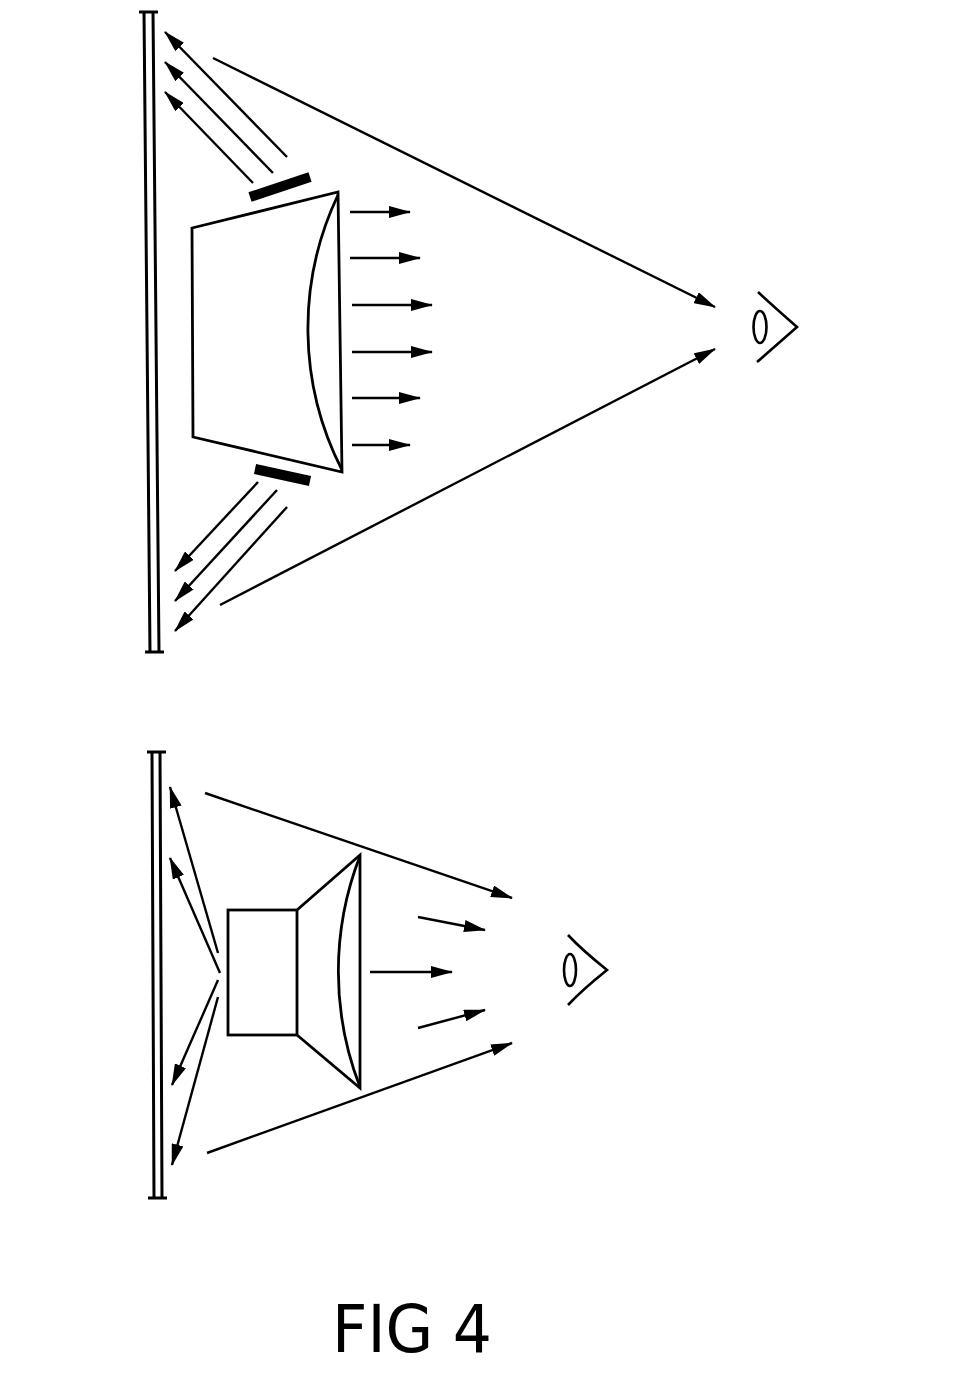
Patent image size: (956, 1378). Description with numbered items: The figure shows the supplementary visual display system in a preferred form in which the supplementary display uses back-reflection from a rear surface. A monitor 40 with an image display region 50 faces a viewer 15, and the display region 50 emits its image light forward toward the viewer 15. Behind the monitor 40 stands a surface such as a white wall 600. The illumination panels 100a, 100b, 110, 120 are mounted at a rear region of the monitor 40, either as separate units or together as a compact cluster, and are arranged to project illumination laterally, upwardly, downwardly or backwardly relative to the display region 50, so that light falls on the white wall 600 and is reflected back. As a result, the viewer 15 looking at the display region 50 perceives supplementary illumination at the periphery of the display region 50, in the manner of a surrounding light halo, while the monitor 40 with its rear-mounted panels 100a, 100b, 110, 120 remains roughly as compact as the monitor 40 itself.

The viewer 15 is at (779, 300).
The monitor 40 is at (218, 240).
The image display region 50 is at (342, 238).
The illumination panel 100a is at (302, 488).
The illumination panel 100b is at (300, 172).
The illumination panel 110 is at (391, 1051).
The illumination panel 120 is at (263, 1015).
The white wall 600 is at (146, 318).